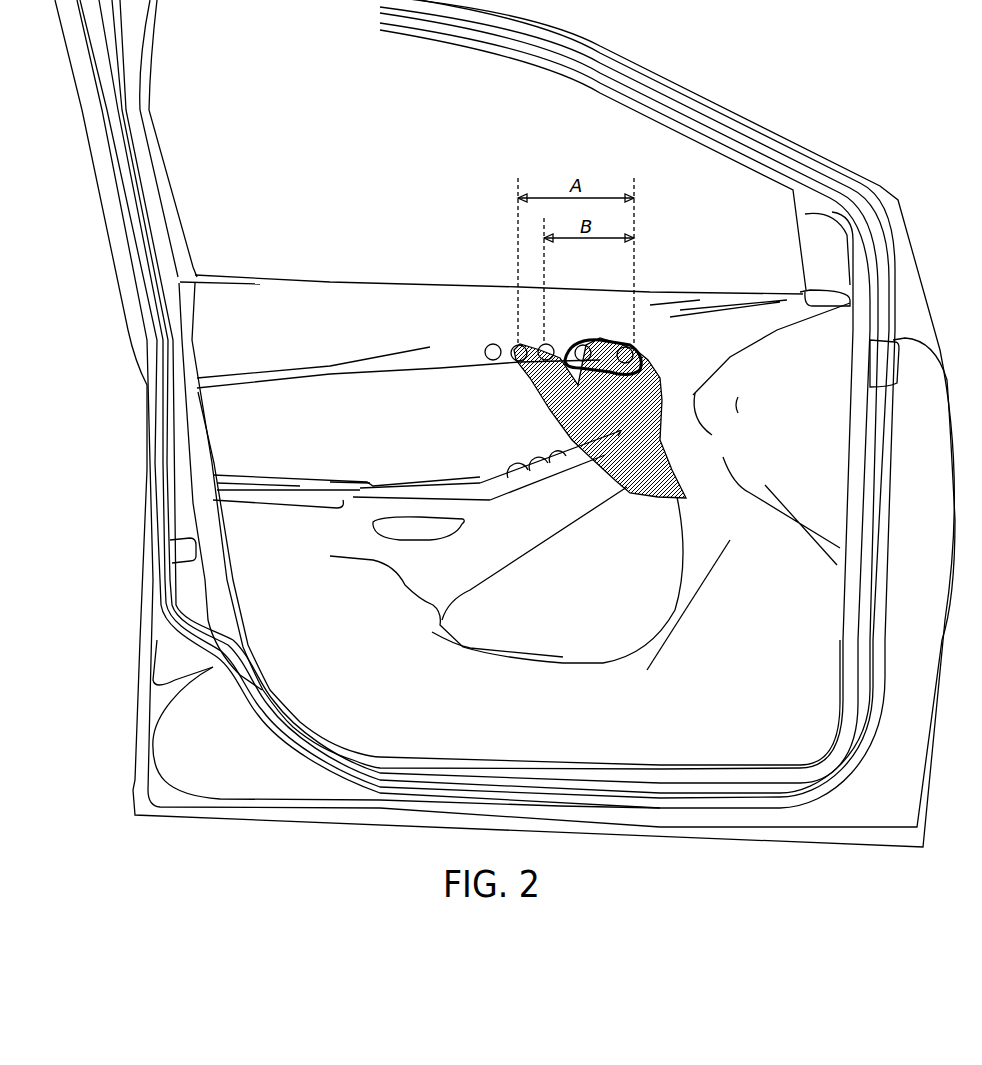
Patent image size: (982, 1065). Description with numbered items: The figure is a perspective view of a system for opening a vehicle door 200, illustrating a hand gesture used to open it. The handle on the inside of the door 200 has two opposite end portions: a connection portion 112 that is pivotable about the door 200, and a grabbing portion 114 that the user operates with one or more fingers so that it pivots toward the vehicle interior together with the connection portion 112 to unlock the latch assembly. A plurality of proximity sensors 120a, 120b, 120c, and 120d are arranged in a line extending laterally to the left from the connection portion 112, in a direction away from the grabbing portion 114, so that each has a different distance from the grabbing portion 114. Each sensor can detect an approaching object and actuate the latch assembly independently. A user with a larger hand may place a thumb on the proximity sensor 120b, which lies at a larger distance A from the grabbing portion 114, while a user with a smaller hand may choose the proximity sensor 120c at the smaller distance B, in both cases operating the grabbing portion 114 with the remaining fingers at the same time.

The door 200 is at (505, 423).
The connection portion 112 is at (588, 340).
The grabbing portion 114 is at (646, 366).
The proximity sensor 120a is at (490, 345).
The proximity sensor 120b is at (516, 362).
The proximity sensor 120c is at (542, 344).
The proximity sensor 120d is at (583, 345).